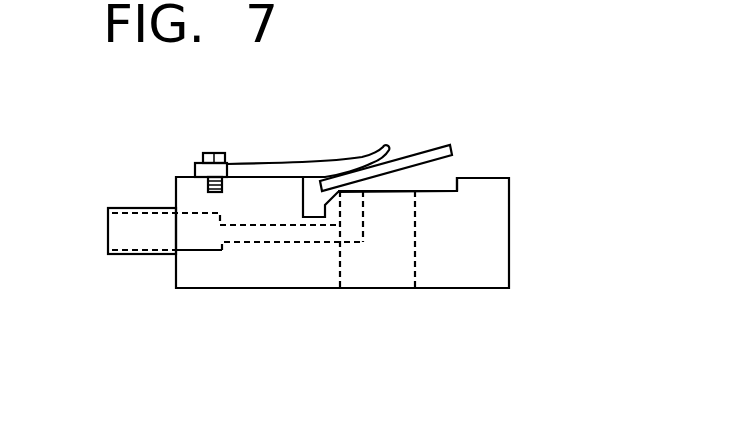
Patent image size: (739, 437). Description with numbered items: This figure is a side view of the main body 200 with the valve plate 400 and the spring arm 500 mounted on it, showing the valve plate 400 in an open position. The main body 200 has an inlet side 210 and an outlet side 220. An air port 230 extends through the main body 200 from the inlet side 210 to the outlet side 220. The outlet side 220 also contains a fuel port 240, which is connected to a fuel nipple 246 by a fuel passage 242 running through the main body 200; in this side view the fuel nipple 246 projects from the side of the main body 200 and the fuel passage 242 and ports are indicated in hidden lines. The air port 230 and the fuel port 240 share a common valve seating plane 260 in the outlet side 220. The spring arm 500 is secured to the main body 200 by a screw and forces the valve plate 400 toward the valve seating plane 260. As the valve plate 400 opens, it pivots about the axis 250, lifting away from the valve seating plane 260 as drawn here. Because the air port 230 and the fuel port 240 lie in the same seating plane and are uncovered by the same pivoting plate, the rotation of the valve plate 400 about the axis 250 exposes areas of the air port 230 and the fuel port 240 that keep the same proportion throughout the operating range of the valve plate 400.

The main body 200 is at (510, 210).
The inlet side 210 is at (490, 288).
The outlet side 220 is at (510, 178).
The air port 230 is at (402, 277).
The fuel port 240 is at (350, 210).
The fuel passage 242 is at (248, 242).
The fuel nipple 246 is at (132, 255).
The axis 250 is at (342, 195).
The valve seating plane 260 is at (446, 189).
The valve plate 400 is at (432, 148).
The spring arm 500 is at (316, 162).